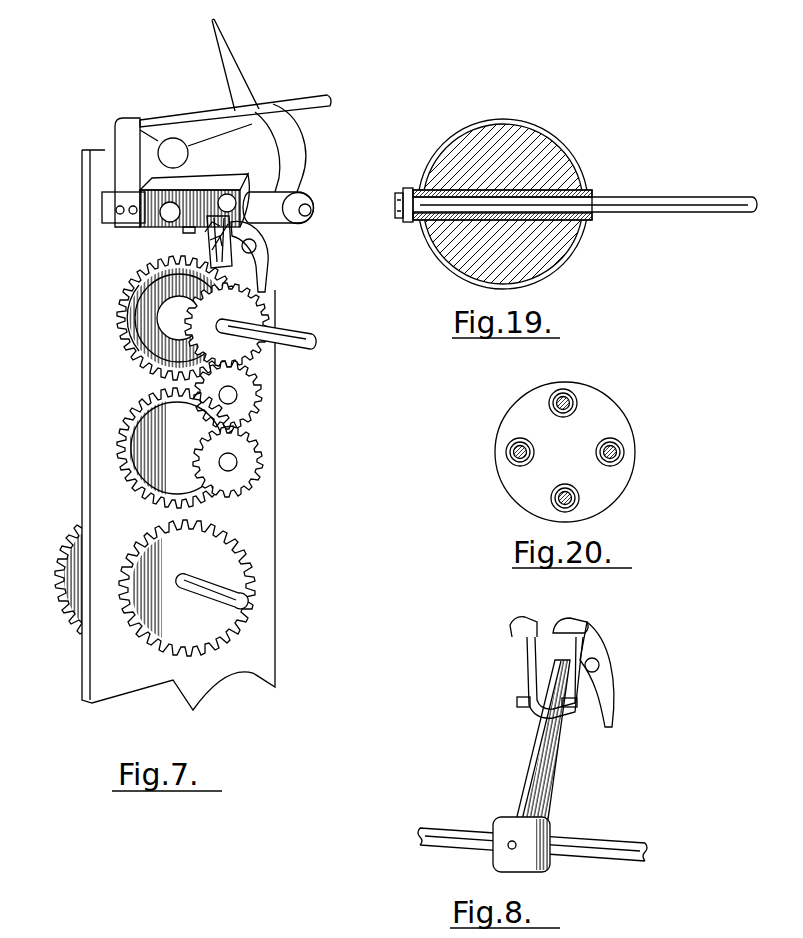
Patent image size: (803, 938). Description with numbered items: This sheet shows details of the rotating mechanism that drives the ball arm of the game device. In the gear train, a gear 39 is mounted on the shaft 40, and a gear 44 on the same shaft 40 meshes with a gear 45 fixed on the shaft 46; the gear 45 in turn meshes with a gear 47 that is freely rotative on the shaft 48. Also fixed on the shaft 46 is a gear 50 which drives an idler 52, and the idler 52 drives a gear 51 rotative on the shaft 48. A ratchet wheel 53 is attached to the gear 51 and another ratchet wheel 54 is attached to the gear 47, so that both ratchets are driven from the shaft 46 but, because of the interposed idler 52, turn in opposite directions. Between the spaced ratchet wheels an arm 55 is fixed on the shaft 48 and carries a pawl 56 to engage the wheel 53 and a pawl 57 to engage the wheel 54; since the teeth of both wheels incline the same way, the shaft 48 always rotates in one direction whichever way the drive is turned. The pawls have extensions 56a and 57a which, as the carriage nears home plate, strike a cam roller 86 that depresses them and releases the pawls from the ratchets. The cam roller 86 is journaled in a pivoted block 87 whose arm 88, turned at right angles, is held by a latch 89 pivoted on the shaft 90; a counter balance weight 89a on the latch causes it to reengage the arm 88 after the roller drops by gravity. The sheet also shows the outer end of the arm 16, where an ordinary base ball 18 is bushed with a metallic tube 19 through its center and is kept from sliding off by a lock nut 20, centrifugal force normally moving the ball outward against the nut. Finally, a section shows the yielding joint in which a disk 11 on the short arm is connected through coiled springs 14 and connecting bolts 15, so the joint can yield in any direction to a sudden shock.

In FIG. 20, the disk 11 is at (608, 413).
In FIG. 20, the coiled springs 14 is at (572, 392).
In FIG. 20, the connecting bolts 15 is at (555, 398).
In FIG. 19, the arm 16 is at (660, 200).
In FIG. 19, the ball 18 is at (483, 133).
In FIG. 19, the metallic tube 19 is at (547, 217).
In FIG. 19, the lock nut 20 is at (407, 193).
In FIG. 7, the gear 39 is at (73, 582).
In FIG. 7, the shaft 40 is at (238, 592).
In FIG. 7, the gear 44 is at (237, 557).
In FIG. 7, the gear 45 is at (153, 453).
In FIG. 7, the shaft 46 is at (237, 462).
In FIG. 7, the gear 47 is at (127, 347).
In FIG. 7, the shaft 48 is at (290, 333).
In FIG. 8, the shaft 48 is at (583, 843).
In FIG. 7, the gear 50 is at (250, 452).
In FIG. 7, the gear 51 is at (240, 315).
In FIG. 7, the idler 52 is at (250, 392).
In FIG. 7, the ratchet wheel 53 is at (153, 312).
In FIG. 7, the ratchet wheel 54 is at (157, 323).
In FIG. 8, the arm 55 is at (567, 687).
In FIG. 7, the pawl 56 is at (262, 283).
In FIG. 8, the pawl 56 is at (610, 687).
In FIG. 7, the extension 56a is at (213, 243).
In FIG. 8, the extension 56a is at (607, 617).
In FIG. 7, the pawl 57 is at (260, 256).
In FIG. 8, the pawl 57 is at (588, 730).
In FIG. 7, the extension 57a is at (207, 230).
In FIG. 8, the extension 57a is at (532, 620).
In FIG. 7, the cam roller 86 is at (203, 183).
In FIG. 7, the pivoted block 87 is at (187, 226).
In FIG. 7, the arm 88 is at (160, 120).
In FIG. 7, the latch 89 is at (244, 88).
In FIG. 7, the counter balance weight 89a is at (167, 143).
In FIG. 7, the shaft 90 is at (314, 208).